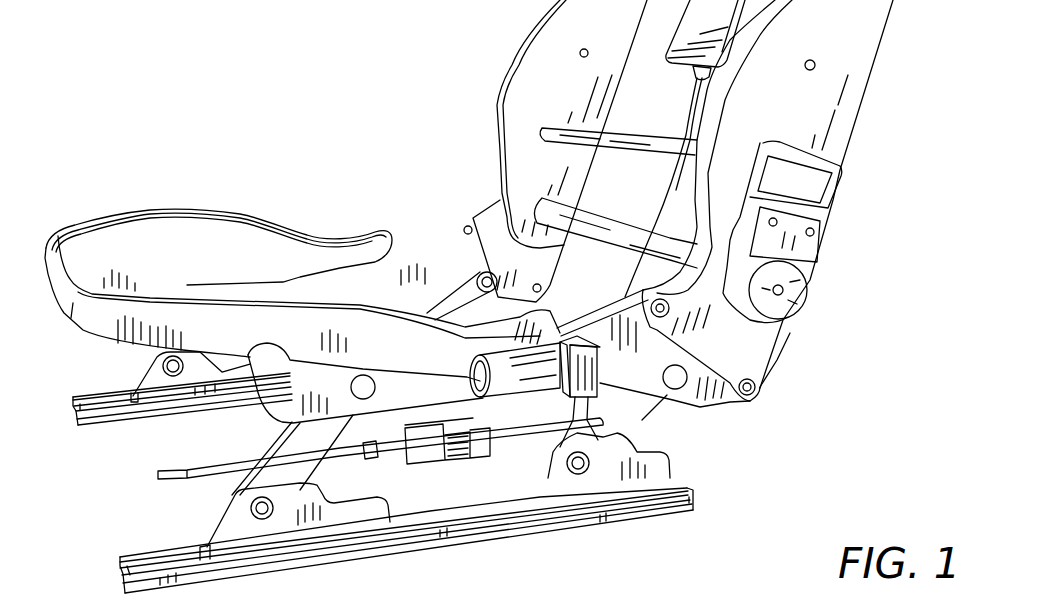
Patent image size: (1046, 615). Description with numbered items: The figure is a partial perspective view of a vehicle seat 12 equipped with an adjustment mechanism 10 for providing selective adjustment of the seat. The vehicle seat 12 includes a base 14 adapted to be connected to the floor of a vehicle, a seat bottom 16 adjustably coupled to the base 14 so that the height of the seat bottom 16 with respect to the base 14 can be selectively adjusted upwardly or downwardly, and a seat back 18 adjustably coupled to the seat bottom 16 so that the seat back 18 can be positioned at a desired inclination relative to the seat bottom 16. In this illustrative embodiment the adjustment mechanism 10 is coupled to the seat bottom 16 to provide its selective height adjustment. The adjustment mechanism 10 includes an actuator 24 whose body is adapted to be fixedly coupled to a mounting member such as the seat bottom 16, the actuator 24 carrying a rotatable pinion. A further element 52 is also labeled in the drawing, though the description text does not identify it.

The adjustment mechanism 10 is at (516, 398).
The vehicle seat 12 is at (334, 233).
The base 14 is at (258, 578).
The seat bottom 16 is at (200, 210).
The seat back 18 is at (520, 45).
The actuator 24 is at (600, 400).
The component 52 is at (762, 609).